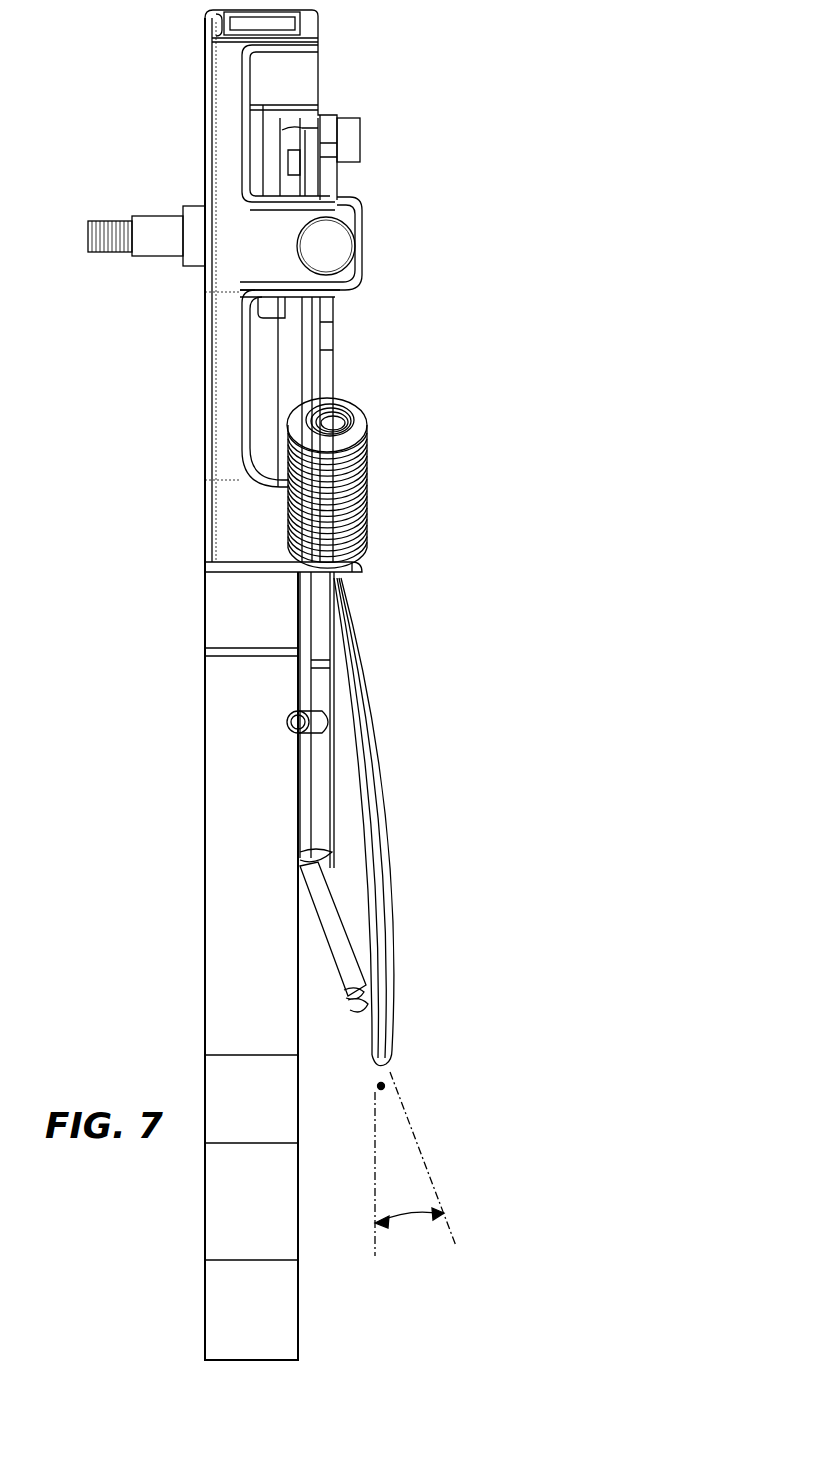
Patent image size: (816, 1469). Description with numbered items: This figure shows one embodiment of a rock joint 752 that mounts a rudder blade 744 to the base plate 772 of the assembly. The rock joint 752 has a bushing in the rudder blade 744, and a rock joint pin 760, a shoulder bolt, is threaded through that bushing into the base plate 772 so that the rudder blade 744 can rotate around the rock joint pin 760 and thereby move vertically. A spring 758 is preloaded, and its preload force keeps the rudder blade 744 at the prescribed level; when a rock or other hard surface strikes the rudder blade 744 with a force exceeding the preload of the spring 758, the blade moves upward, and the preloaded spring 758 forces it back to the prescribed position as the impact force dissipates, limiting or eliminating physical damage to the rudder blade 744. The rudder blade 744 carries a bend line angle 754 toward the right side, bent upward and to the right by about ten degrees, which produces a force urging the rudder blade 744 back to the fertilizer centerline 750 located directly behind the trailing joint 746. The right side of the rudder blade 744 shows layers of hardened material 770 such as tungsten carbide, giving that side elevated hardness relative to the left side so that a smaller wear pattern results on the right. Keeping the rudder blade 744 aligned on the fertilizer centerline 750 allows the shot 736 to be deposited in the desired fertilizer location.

The shot 736 is at (383, 1091).
The rudder blade 744 is at (350, 858).
The trailing joint 746 is at (326, 233).
The fertilizer centerline 750 is at (375, 1200).
The rock joint 752 is at (346, 329).
The bend line angle 754 is at (410, 1223).
The spring 758 is at (370, 460).
The rock joint pin 760 is at (147, 258).
The hardened material 770 is at (385, 955).
The base plate 772 is at (242, 876).